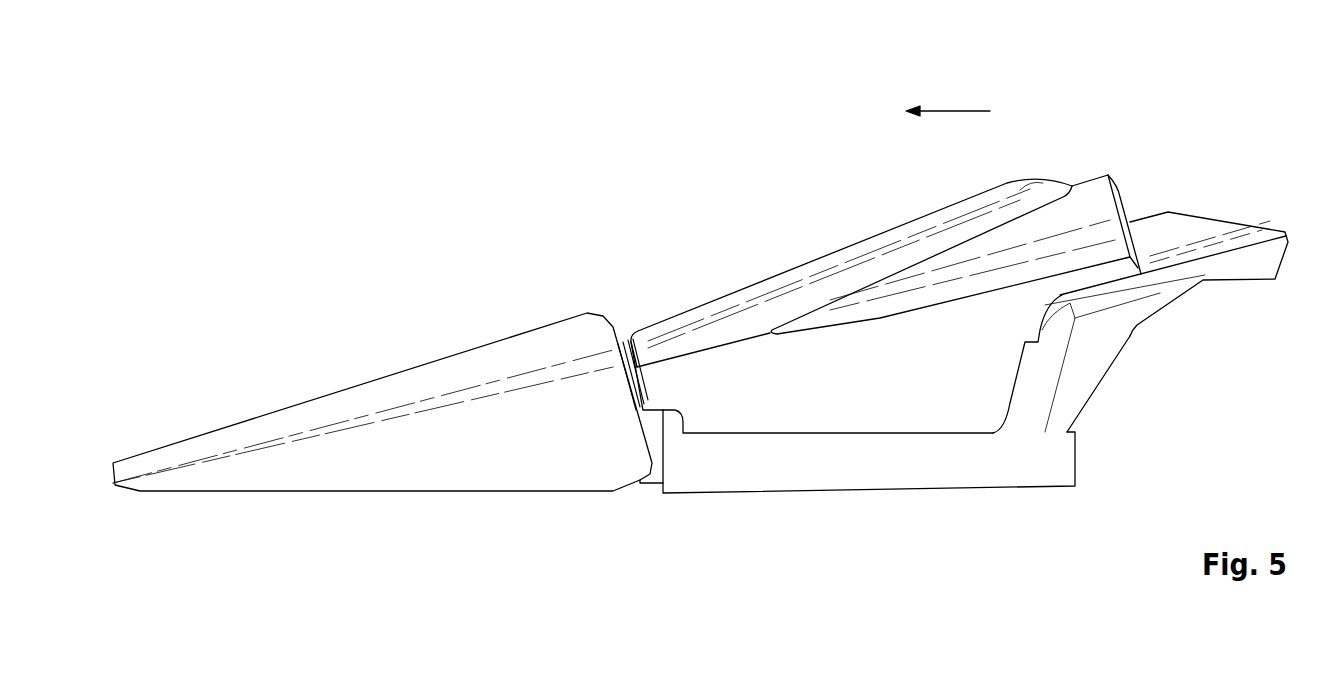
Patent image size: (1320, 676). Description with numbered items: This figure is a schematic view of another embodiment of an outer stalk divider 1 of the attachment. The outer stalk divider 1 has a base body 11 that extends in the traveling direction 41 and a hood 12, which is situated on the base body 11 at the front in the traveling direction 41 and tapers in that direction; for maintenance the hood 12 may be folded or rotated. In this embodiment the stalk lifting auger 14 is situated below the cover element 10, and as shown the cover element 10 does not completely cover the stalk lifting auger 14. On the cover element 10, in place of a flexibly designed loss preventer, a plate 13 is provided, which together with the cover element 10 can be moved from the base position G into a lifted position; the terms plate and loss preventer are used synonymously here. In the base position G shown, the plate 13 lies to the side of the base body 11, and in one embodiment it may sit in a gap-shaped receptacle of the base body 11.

The outer stalk divider 1 is at (462, 197).
The cover element 10 is at (880, 294).
The base position G is at (832, 265).
The base body 11 is at (747, 478).
The hood 12 is at (480, 478).
The plate 13 is at (920, 405).
The stalk lifting auger 14 is at (1100, 238).
The traveling direction 41 is at (955, 110).